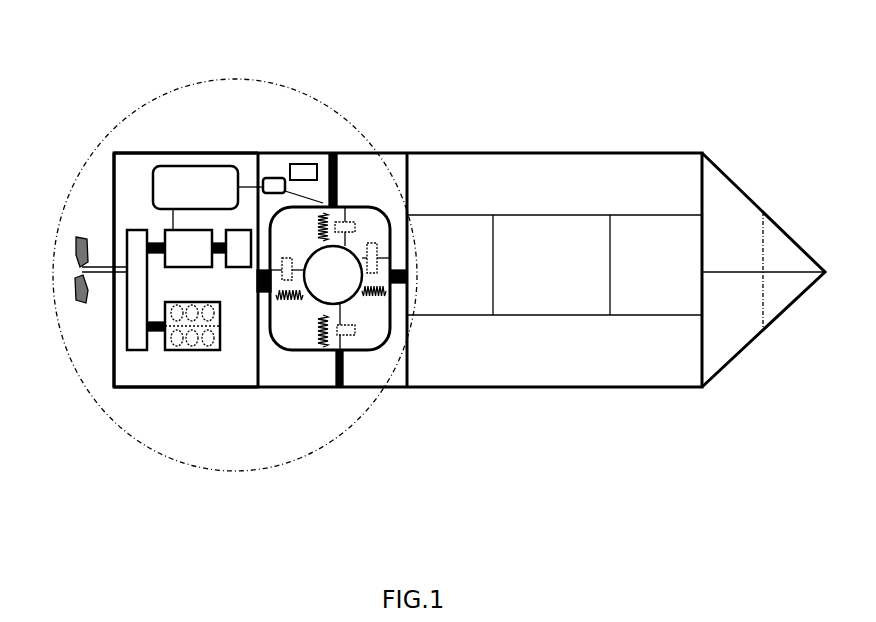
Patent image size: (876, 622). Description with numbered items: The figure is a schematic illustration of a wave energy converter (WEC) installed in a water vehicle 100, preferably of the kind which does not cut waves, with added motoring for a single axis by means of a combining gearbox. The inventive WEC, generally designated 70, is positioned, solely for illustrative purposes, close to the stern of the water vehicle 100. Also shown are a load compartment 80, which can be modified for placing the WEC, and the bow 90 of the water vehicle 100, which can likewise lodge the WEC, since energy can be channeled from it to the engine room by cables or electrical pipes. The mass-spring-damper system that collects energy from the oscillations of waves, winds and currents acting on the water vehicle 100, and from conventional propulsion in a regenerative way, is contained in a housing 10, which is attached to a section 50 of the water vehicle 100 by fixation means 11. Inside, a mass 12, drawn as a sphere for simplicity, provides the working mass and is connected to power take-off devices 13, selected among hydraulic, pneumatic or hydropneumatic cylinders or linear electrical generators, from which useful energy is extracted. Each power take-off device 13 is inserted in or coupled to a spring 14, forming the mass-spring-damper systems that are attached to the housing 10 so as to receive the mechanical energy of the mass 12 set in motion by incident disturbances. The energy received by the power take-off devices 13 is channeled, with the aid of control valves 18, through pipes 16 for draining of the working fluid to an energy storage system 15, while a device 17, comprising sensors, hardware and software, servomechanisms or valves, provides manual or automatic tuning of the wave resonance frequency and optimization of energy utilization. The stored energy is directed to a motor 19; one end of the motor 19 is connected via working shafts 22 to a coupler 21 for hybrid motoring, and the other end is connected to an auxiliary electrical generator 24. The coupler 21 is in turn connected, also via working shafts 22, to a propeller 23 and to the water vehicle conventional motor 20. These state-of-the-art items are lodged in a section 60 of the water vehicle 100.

The housing 10 is at (357, 309).
The fixation means 11 is at (340, 152).
The mass 12 is at (373, 357).
The power take-off device 13 is at (372, 210).
The spring 14 is at (292, 305).
The energy storage system 15 is at (192, 157).
The pipes 16 is at (245, 177).
The control device 17 is at (305, 160).
The control valves 18 is at (270, 172).
The motor 19 is at (160, 222).
The water vehicle conventional motor 20 is at (200, 358).
The coupler 21 is at (115, 333).
The working shafts 22 is at (100, 258).
The propeller 23 is at (67, 280).
The auxiliary electrical generator 24 is at (238, 272).
The section 50 is at (292, 408).
The section 60 is at (121, 402).
The wave energy converter 70 is at (126, 79).
The load compartment 80 is at (538, 227).
The bow 90 is at (735, 228).
The water vehicle 100 is at (624, 441).